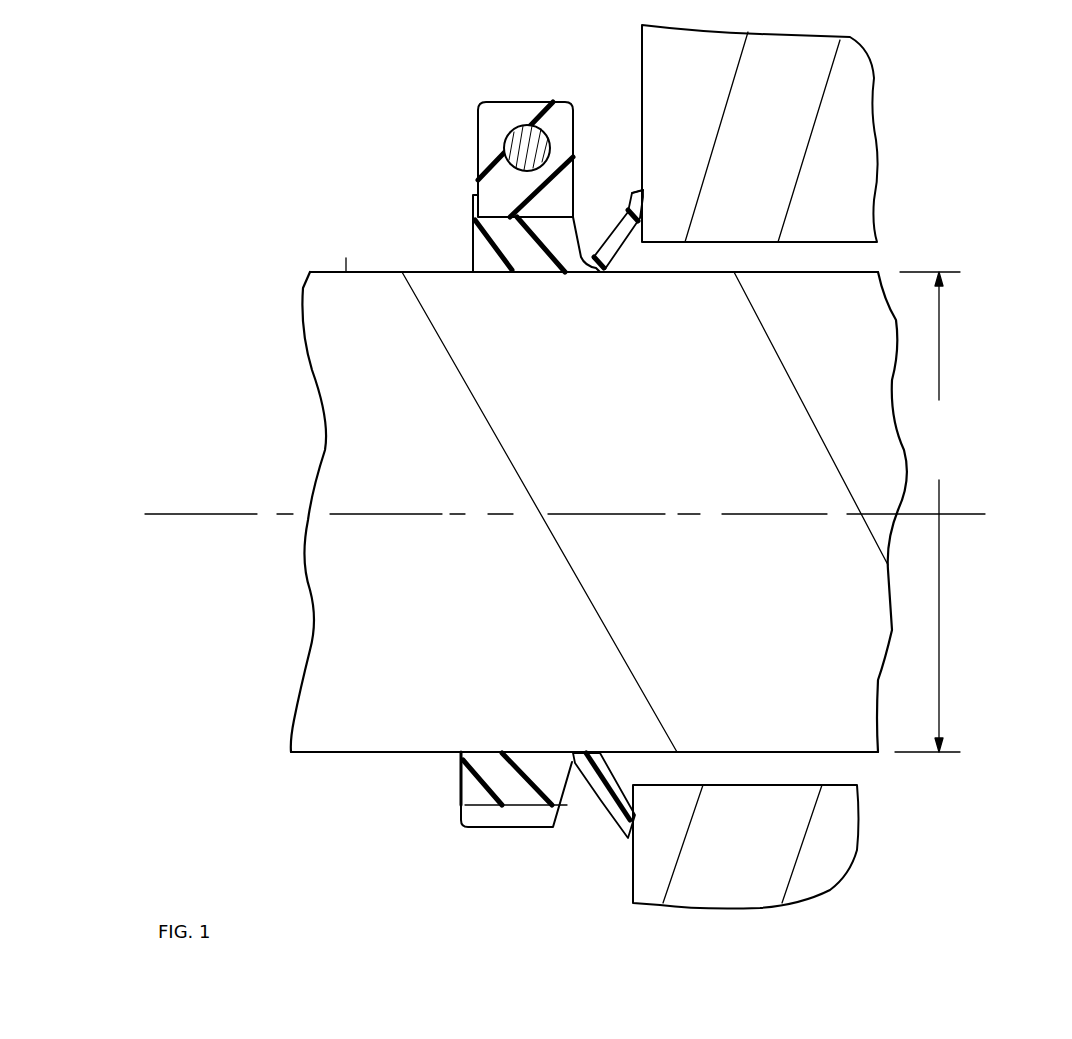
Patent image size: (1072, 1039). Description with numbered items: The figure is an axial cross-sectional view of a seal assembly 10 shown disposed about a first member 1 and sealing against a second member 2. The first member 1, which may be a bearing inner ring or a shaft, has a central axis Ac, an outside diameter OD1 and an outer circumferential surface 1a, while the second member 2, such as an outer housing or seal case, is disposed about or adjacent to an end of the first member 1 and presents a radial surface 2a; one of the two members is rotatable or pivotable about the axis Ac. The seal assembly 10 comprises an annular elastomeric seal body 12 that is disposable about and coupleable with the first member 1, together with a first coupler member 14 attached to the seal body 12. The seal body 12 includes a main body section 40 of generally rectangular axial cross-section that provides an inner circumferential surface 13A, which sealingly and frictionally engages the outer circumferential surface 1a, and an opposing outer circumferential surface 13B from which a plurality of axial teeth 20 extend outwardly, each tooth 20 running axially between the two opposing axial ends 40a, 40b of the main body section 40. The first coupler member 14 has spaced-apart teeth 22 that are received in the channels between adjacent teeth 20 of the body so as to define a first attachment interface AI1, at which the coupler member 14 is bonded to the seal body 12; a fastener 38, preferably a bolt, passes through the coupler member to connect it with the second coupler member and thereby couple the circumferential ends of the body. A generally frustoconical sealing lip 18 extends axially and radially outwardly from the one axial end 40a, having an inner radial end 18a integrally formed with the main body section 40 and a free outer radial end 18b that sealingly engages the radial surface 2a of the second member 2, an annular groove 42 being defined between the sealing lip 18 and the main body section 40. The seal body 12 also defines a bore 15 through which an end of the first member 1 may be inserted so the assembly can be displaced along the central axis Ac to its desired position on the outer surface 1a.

The first member 1 is at (298, 288).
The outer circumferential surface 1a is at (346, 262).
The second member 2 is at (888, 110).
The radial surface 2a is at (642, 68).
The seal assembly 10 is at (485, 192).
The seal body 12 is at (499, 247).
The inner circumferential surface 13A is at (502, 752).
The outer circumferential surface 13B is at (488, 807).
The first coupler member 14 is at (477, 143).
The bore 15 is at (537, 752).
The sealing lip 18 is at (632, 252).
The inner radial end 18a is at (592, 266).
The outer radial end 18b is at (640, 193).
The axial teeth 20 is at (518, 823).
The teeth 22 is at (495, 205).
The fastener 38 is at (525, 120).
The main body section 40 is at (473, 243).
The axial end 40a is at (583, 233).
The axial end 40b is at (446, 278).
The annular groove 42 is at (585, 813).
The first attachment interface AI1 is at (580, 207).
The outside diameter OD1 is at (927, 512).
The central axis Ac is at (970, 514).